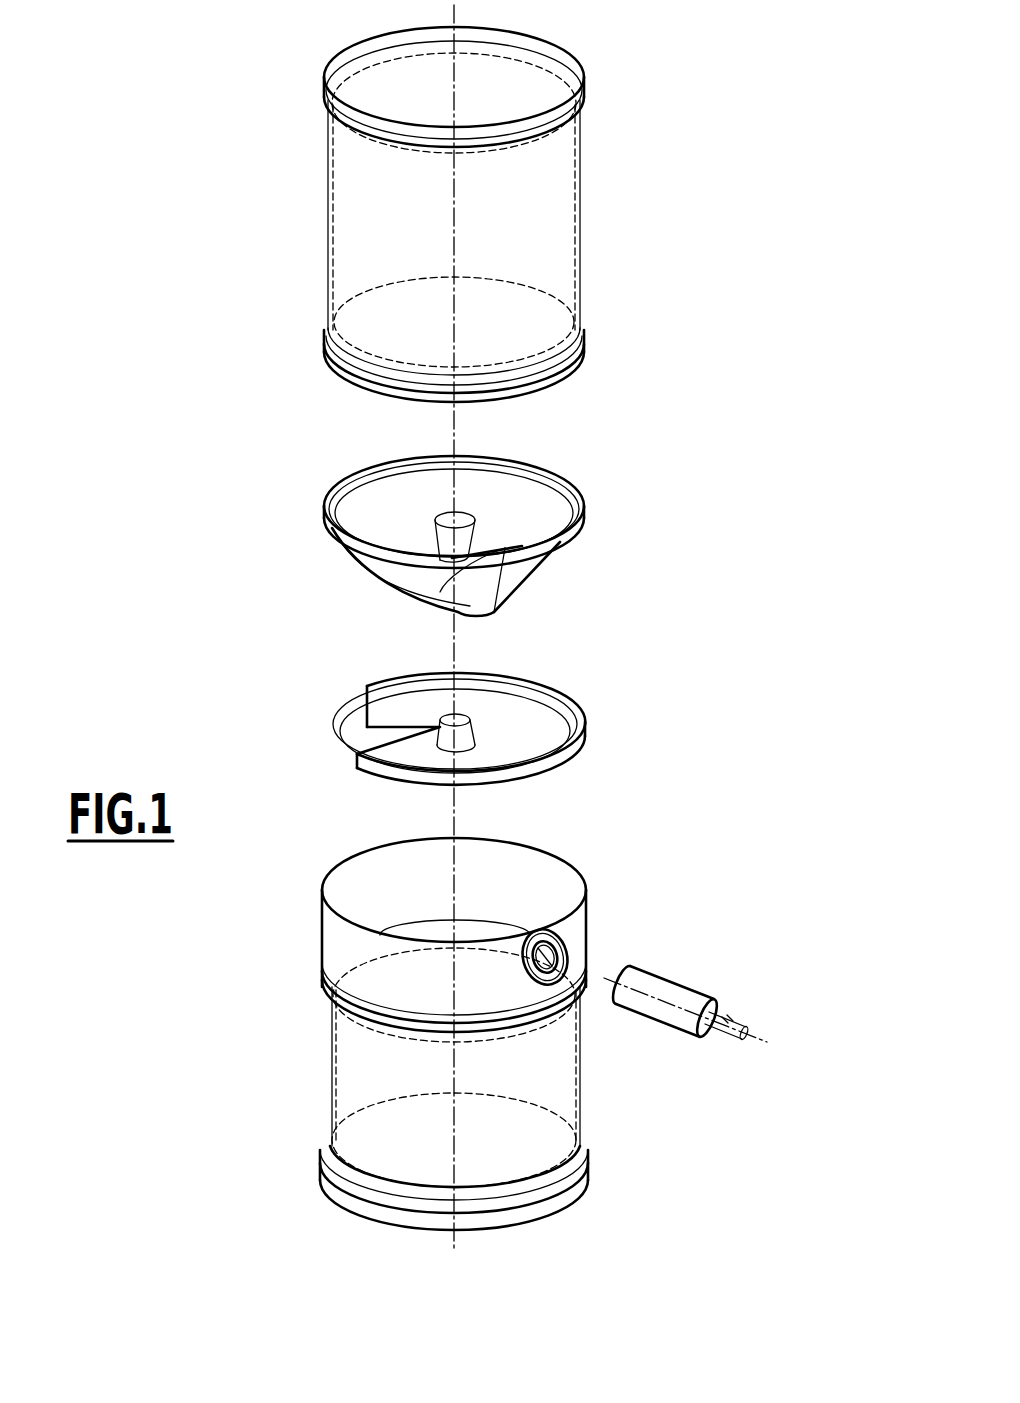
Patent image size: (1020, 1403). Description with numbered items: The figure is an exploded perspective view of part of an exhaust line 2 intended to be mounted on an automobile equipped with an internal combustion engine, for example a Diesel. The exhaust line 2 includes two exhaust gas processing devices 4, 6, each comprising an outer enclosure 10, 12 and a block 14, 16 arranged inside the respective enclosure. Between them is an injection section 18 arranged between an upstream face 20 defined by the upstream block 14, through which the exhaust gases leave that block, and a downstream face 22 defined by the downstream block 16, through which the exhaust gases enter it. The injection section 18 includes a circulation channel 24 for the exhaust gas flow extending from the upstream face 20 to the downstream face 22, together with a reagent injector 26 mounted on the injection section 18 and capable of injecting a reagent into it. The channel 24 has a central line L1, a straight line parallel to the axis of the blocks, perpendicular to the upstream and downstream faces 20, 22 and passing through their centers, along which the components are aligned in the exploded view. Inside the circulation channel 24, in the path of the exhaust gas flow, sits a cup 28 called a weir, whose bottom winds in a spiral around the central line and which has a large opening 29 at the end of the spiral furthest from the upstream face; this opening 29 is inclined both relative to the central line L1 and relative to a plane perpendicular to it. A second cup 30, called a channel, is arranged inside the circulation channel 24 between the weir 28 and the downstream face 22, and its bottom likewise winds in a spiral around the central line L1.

The exhaust line 2 is at (174, 119).
The exhaust gas processing device 4 is at (702, 213).
The exhaust gas processing device 6 is at (206, 1045).
The outer enclosure 10 is at (581, 178).
The outer enclosure 12 is at (330, 1077).
The upstream block 14 is at (577, 247).
The downstream block 16 is at (335, 1043).
The injection section 18 is at (657, 625).
The upstream face 20 is at (527, 338).
The downstream face 22 is at (365, 985).
The circulation channel 24 is at (585, 478).
The reagent injector 26 is at (667, 988).
The cup (weir) 28 is at (308, 548).
The opening 29 is at (495, 588).
The second cup (channel) 30 is at (338, 737).
The central line L1 is at (455, 420).